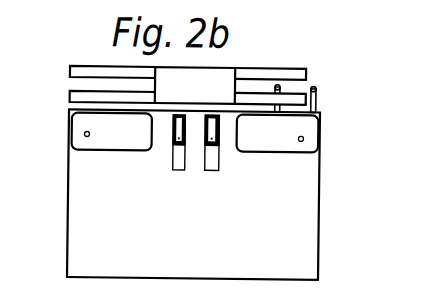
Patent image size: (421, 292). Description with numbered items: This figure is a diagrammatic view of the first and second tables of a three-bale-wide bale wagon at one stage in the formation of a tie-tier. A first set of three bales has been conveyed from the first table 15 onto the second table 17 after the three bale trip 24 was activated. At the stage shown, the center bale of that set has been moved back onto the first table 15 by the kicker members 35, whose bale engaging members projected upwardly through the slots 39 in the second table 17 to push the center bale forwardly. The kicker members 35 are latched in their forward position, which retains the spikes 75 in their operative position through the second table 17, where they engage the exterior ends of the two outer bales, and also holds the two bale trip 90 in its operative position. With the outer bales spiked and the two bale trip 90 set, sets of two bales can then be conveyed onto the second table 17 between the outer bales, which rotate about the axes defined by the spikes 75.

The first table 15 is at (267, 67).
The second table 17 is at (319, 225).
The three bale trip 24 is at (315, 102).
The kicker members 35 is at (172, 135).
The slots 39 is at (208, 170).
The spikes 75 is at (84, 136).
The two bale trip 90 is at (278, 88).